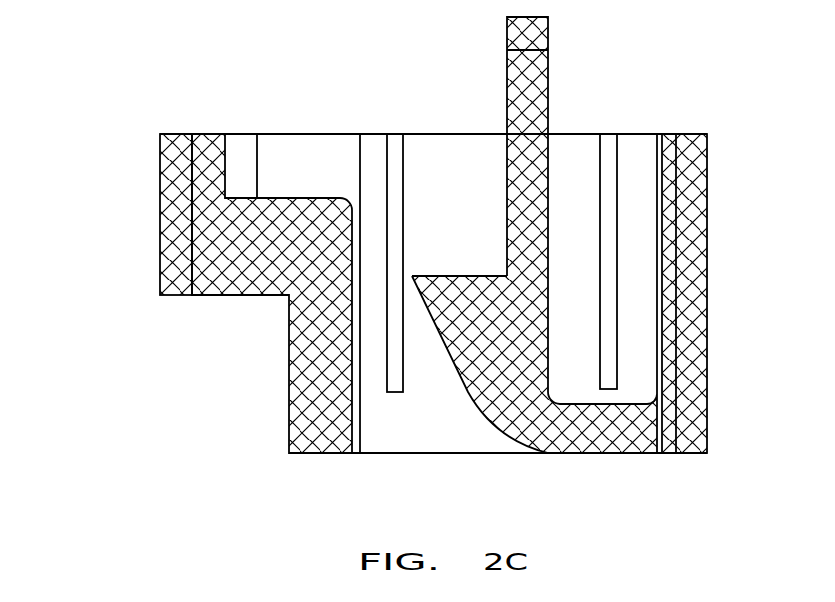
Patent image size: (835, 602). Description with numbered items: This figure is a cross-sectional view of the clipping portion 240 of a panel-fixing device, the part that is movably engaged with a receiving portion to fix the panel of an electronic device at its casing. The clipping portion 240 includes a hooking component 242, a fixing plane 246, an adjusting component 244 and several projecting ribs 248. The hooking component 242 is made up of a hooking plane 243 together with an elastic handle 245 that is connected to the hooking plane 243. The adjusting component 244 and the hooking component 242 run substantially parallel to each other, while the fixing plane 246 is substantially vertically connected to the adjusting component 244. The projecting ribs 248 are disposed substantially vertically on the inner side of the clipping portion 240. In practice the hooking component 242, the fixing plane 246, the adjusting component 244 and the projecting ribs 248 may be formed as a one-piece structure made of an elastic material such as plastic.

The clipping portion 240 is at (75, 55).
The hooking component 242 is at (552, 131).
The hooking plane 243 is at (482, 283).
The adjusting component 244 is at (289, 435).
The elastic handle 245 is at (542, 57).
The fixing plane 246 is at (206, 313).
The projecting ribs 248 is at (395, 138).